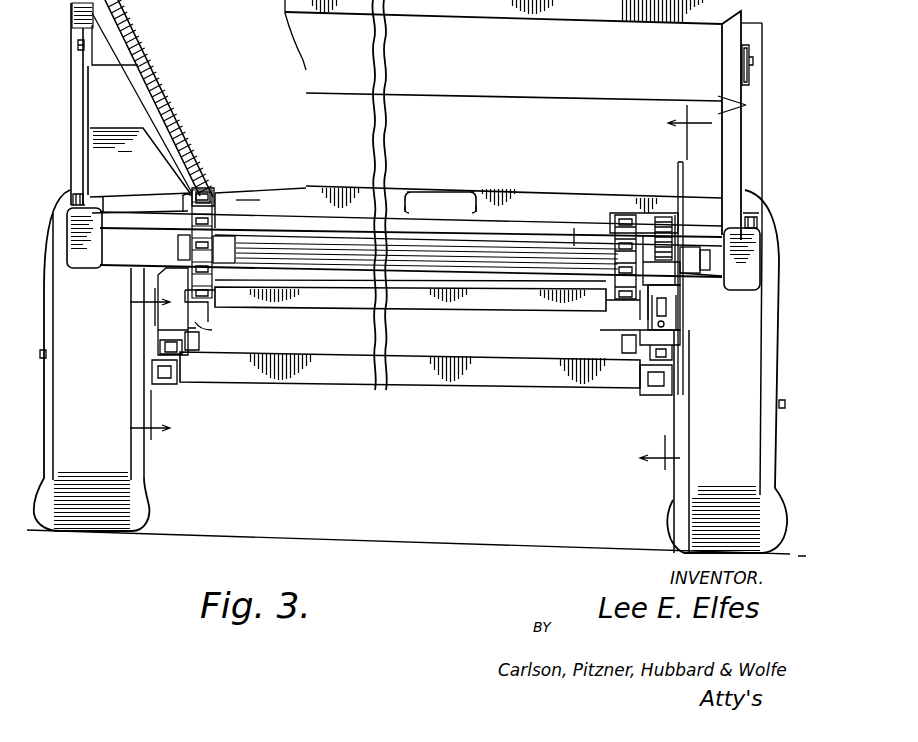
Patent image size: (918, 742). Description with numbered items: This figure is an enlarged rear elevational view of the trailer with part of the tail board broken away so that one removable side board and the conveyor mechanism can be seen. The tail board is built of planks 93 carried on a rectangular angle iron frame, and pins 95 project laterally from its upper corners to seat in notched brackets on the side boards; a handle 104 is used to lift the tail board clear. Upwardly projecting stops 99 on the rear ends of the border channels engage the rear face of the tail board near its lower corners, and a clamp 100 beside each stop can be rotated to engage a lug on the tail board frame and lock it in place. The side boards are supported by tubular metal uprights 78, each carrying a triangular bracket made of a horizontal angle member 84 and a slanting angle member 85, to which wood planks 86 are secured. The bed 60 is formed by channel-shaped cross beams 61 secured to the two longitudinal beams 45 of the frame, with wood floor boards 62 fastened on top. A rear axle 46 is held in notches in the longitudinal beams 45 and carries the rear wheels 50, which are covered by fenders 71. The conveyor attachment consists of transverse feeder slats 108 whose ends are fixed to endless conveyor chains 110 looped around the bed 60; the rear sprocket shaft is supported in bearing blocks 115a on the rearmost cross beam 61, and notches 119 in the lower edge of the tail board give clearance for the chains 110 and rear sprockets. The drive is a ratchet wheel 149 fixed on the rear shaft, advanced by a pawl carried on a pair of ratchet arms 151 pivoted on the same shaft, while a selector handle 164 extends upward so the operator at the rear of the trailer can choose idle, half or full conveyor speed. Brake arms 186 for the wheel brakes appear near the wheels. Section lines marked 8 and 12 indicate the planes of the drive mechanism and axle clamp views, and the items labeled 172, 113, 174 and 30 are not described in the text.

The planks 93 is at (746, 105).
The tubular metal uprights 78 is at (78, 62).
The slanting angle member 85 is at (170, 140).
The wood planks 86 is at (142, 62).
The fenders 71 is at (118, 138).
The clamp 100 is at (79, 184).
The horizontal angle member 84 is at (125, 205).
The bracket block 172 is at (203, 186).
The cross beams 61 is at (118, 262).
The stops 99 is at (72, 242).
The feeder slats 108 is at (278, 208).
The bed 60 is at (263, 208).
The bearing blocks 115a is at (225, 236).
The handle 104 is at (462, 192).
The floor boards 62 is at (578, 236).
The shaft 113 is at (468, 260).
The notches 119 is at (622, 214).
The ratchet wheel 149 is at (658, 216).
The selector handle 164 is at (685, 200).
The pins 95 is at (752, 62).
The conveyor chains 110 is at (205, 298).
The link 174 is at (417, 332).
The brake arms 186 is at (200, 346).
The ratchet arms 151 is at (664, 312).
The rear axle 46 is at (445, 383).
The longitudinal beams 45 is at (178, 288).
The section line 12 is at (133, 364).
The section line 8 is at (668, 288).
The rear wheels 50 is at (126, 483).
The right wheel leg 30 is at (692, 490).